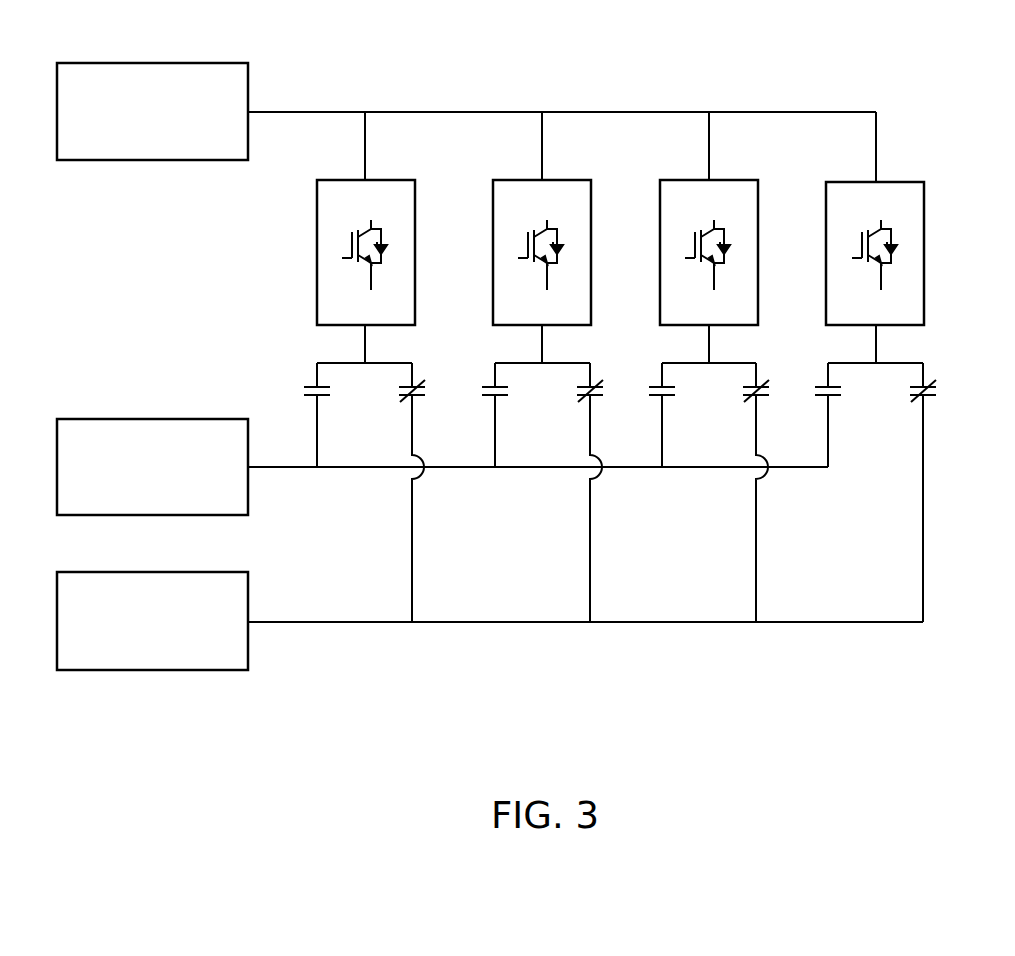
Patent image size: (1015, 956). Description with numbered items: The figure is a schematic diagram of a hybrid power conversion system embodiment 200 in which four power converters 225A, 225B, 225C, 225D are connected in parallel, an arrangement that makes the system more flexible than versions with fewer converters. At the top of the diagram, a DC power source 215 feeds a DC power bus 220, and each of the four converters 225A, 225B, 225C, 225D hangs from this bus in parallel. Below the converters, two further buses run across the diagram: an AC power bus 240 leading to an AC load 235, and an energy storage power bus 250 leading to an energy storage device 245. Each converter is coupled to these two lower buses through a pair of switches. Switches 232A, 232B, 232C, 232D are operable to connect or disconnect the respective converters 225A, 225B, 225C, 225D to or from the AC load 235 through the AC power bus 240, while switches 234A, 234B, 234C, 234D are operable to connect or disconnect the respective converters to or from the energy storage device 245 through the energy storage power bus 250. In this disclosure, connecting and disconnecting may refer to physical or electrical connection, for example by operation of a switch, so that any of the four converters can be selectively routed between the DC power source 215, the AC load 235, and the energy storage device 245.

The embodiment 200 is at (473, 688).
The DC power source 215 is at (152, 63).
The DC power bus 220 is at (268, 110).
The converter 225A is at (380, 180).
The converter 225B is at (555, 180).
The converter 225C is at (724, 180).
The converter 225D is at (890, 182).
The switch 232A is at (312, 385).
The switch 232B is at (490, 385).
The switch 232C is at (658, 385).
The switch 232D is at (825, 385).
The switch 234A is at (414, 398).
The switch 234B is at (592, 398).
The switch 234C is at (758, 398).
The switch 234D is at (925, 398).
The AC load 235 is at (134, 419).
The AC power bus 240 is at (262, 470).
The energy storage device 245 is at (132, 572).
The energy storage power bus 250 is at (272, 622).